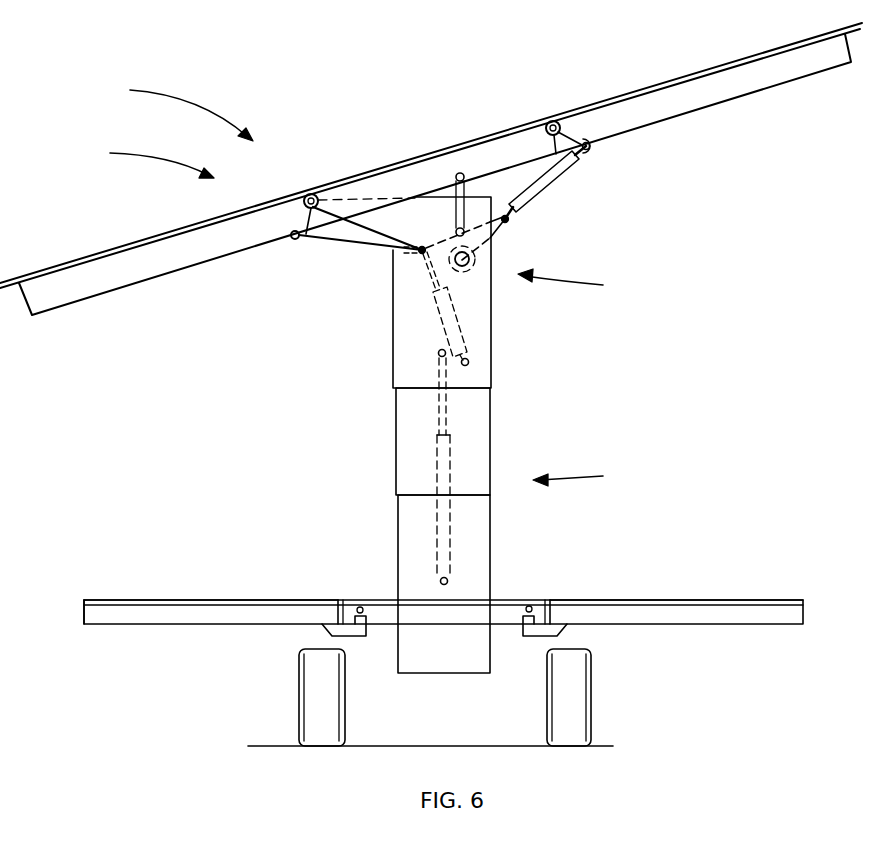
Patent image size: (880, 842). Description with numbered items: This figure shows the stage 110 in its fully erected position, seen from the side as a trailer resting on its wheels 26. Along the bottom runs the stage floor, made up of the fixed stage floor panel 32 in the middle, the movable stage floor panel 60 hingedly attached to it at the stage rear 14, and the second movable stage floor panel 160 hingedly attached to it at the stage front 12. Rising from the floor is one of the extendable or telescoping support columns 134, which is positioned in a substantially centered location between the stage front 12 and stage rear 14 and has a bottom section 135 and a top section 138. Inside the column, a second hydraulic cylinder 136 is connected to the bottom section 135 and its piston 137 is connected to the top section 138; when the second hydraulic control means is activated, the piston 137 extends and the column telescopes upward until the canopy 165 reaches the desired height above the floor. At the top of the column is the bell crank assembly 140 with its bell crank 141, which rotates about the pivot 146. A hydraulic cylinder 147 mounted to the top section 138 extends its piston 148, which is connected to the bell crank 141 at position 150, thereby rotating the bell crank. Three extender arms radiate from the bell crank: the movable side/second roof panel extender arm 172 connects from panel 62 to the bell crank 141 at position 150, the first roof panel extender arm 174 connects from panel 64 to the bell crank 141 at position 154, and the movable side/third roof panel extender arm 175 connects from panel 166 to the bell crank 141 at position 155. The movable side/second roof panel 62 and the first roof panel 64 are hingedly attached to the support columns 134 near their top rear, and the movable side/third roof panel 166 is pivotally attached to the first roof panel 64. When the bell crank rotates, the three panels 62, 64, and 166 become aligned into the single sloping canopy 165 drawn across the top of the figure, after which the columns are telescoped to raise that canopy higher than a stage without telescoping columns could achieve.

The stage front 12 is at (803, 611).
The stage rear 14 is at (85, 610).
The wheels 26 is at (320, 732).
The fixed stage floor panel 32 is at (390, 600).
The movable stage floor panel 60 is at (203, 600).
The movable side/second roof panel 62 is at (103, 252).
The first roof panel 64 is at (380, 168).
The stage 110 is at (166, 108).
The support columns 134 is at (523, 441).
The bottom section 135 is at (492, 570).
The second hydraulic cylinder 136 is at (447, 537).
The piston 137 is at (446, 412).
The top section 138 is at (467, 343).
The bell crank assembly 140 is at (556, 258).
The bell crank 141 is at (492, 243).
The pivot 146 is at (467, 265).
The hydraulic cylinder 147 is at (470, 365).
The piston 148 is at (430, 278).
The position 150 is at (420, 255).
The position 154 is at (463, 226).
The position 155 is at (508, 221).
The second movable stage floor panel 160 is at (753, 600).
The canopy 165 is at (135, 160).
The movable side/third roof panel 166 is at (682, 77).
The movable side/second roof panel extender arm 172 is at (333, 245).
The first roof panel extender arm 174 is at (453, 208).
The movable side/third roof panel extender arm 175 is at (566, 168).